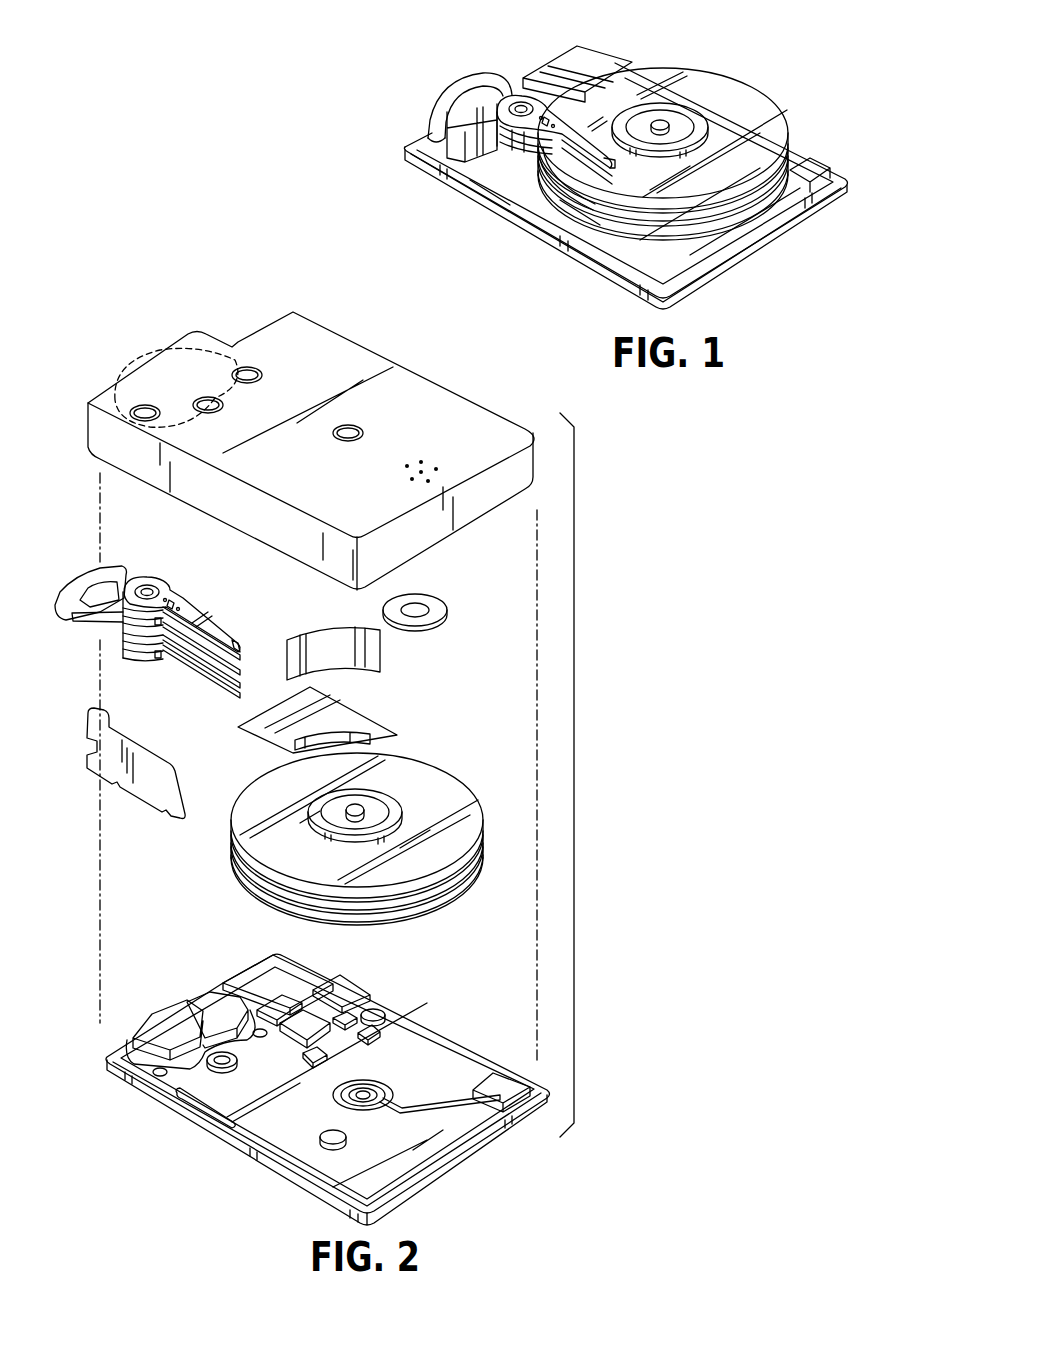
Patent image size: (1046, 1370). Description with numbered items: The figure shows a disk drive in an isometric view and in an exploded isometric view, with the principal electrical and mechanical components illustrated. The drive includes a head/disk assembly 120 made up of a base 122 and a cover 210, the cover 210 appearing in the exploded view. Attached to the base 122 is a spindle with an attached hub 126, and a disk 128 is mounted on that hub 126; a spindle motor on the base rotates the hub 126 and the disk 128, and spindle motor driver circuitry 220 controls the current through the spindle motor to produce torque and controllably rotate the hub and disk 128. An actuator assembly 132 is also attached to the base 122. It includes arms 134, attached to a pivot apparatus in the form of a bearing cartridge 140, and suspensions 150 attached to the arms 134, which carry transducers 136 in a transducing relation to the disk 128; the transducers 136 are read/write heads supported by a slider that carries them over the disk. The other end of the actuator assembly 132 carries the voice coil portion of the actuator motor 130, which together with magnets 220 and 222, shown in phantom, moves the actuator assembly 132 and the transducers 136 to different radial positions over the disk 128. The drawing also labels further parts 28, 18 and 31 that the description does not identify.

In FIG. 1, the head/disk assembly 120 is at (766, 58).
In FIG. 1, the base 122 is at (680, 268).
In FIG. 2, the base 122 is at (420, 1050).
In FIG. 1, the spindle with attached hub 126 is at (667, 123).
In FIG. 2, the spindle with attached hub 126 is at (363, 805).
In FIG. 1, the disk 128 is at (772, 113).
In FIG. 2, the disk 128 is at (457, 790).
In FIG. 1, the actuator motor 130 is at (460, 83).
In FIG. 2, the actuator motor 130 is at (88, 580).
In FIG. 1, the actuator assembly 132 is at (463, 168).
In FIG. 2, the actuator assembly 132 is at (123, 655).
In FIG. 1, the arms 134 is at (562, 111).
In FIG. 2, the arms 134 is at (173, 574).
In FIG. 1, the transducers 136 is at (596, 165).
In FIG. 1, the bearing cartridge 140 is at (518, 103).
In FIG. 2, the bearing cartridge 140 is at (147, 588).
In FIG. 1, the suspensions 150 is at (548, 150).
In FIG. 2, the suspensions 150 is at (213, 627).
In FIG. 1, the latch 28 is at (450, 113).
In FIG. 2, the head gimbal 18 is at (242, 648).
In FIG. 2, the cover 210 is at (440, 400).
In FIG. 2, the magnets 222 is at (174, 356).
In FIG. 2, the spindle motor driver circuitry 220 is at (160, 1013).
In FIG. 2, the printed circuit board assembly 31 is at (374, 976).